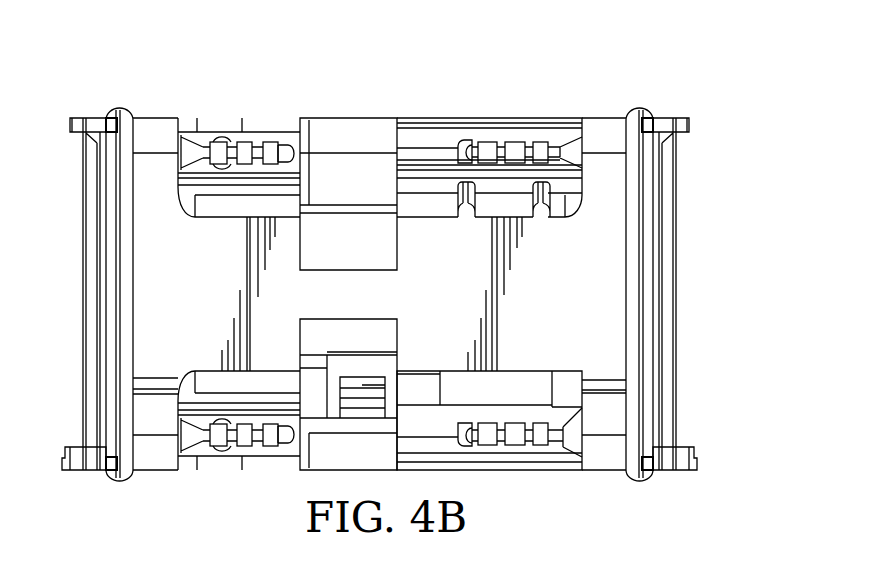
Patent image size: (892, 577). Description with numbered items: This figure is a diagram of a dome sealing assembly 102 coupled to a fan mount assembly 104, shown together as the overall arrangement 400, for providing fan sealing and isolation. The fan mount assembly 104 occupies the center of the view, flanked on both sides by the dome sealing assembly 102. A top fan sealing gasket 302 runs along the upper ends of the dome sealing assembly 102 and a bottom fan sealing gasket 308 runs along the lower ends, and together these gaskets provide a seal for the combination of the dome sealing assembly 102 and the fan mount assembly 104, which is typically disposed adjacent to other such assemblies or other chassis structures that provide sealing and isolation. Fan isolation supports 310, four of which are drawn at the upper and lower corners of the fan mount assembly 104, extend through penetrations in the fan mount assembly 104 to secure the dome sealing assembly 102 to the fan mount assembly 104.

The connector assembly 400 is at (743, 68).
The dome sealing assembly 102 is at (82, 300).
The fan mount assembly 104 is at (351, 118).
The top fan sealing gasket 302 is at (118, 110).
The bottom fan sealing gasket 308 is at (114, 481).
The fan isolation supports 310 is at (243, 130).